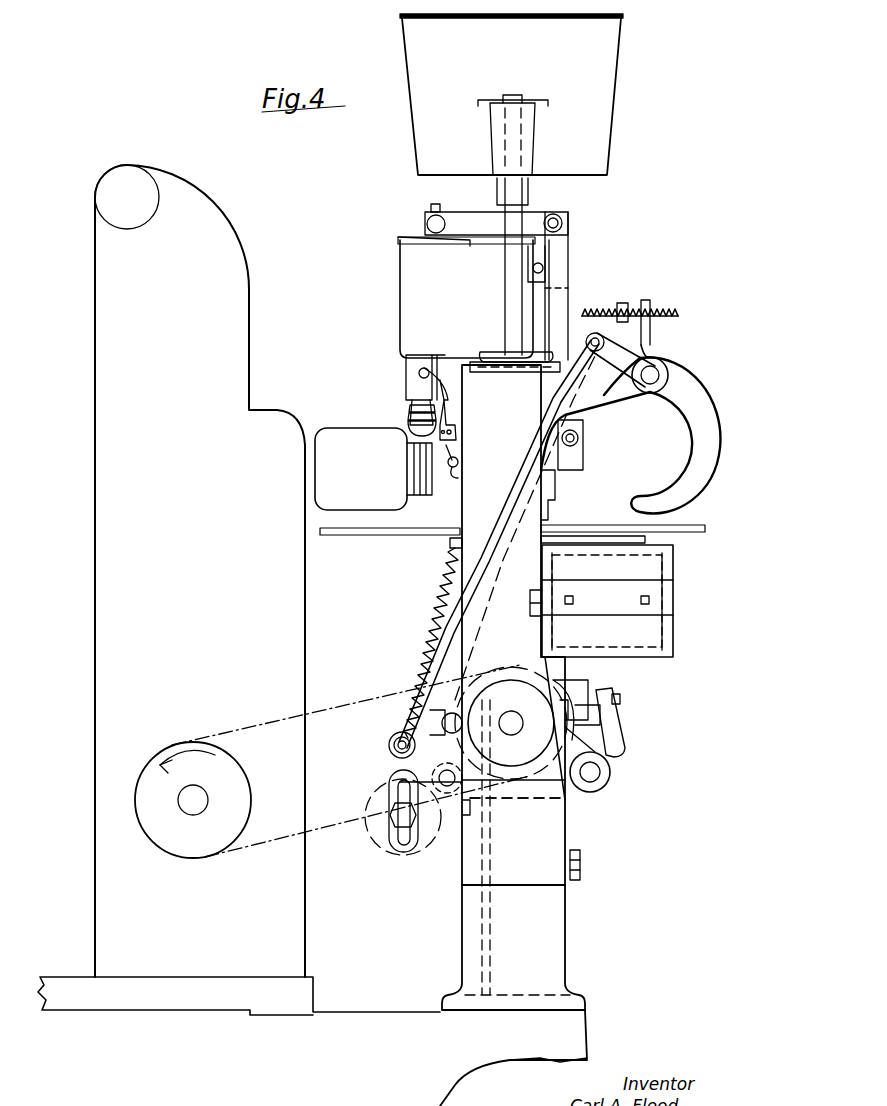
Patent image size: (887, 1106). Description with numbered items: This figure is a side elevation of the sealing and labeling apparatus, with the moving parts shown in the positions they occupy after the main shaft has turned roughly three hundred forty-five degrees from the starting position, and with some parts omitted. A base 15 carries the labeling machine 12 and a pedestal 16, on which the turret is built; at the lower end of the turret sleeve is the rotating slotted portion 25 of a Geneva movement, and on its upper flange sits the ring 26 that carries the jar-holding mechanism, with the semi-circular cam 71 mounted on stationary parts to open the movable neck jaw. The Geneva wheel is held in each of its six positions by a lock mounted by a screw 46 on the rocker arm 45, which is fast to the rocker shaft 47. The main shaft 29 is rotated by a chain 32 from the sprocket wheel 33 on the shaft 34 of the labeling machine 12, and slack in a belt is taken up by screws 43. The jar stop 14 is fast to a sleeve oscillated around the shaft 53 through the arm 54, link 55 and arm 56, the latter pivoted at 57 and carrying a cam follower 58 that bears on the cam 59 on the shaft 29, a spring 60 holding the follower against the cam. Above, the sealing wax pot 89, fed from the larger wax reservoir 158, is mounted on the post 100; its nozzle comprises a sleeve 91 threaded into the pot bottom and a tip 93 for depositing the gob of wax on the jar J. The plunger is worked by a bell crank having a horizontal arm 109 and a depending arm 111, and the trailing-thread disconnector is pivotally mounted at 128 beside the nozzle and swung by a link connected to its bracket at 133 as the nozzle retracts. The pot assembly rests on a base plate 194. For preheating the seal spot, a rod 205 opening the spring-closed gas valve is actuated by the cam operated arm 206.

The wax reservoir 158 is at (511, 184).
The horizontal arm 109 is at (496, 220).
The sealing wax pot 89 is at (466, 297).
The post 100 is at (542, 268).
The depending arm 111 is at (553, 280).
The base plate 194 is at (533, 366).
The rod 205 is at (598, 312).
The cam operated arm 206 is at (650, 303).
The arm 54 is at (618, 345).
The shaft 53 is at (652, 372).
The jar stop 14 is at (705, 413).
The sleeve 91 is at (406, 362).
The pivot 128 is at (419, 373).
The tip 93 is at (412, 428).
The jar J is at (373, 469).
The pivot 133 is at (455, 478).
The link 55 is at (520, 500).
The spring 60 is at (432, 616).
The ring 26 is at (708, 525).
The semi-circular cam 71 is at (648, 539).
The screws 43 is at (641, 600).
The chain 32 is at (512, 667).
The cam follower 58 is at (460, 717).
The shaft 29 is at (507, 733).
The arm 56 is at (400, 740).
The pivot 57 is at (440, 772).
The cam 59 is at (538, 800).
The rotating slotted portion of Geneva movement 25 is at (592, 690).
The screw 46 is at (620, 699).
The rocker arm 45 is at (612, 736).
The rocker shaft 47 is at (600, 772).
The sprocket wheel 33 is at (182, 852).
The shaft 34 is at (190, 803).
The labeling machine 12 is at (239, 590).
The pedestal 16 is at (558, 948).
The base 15 is at (469, 1058).